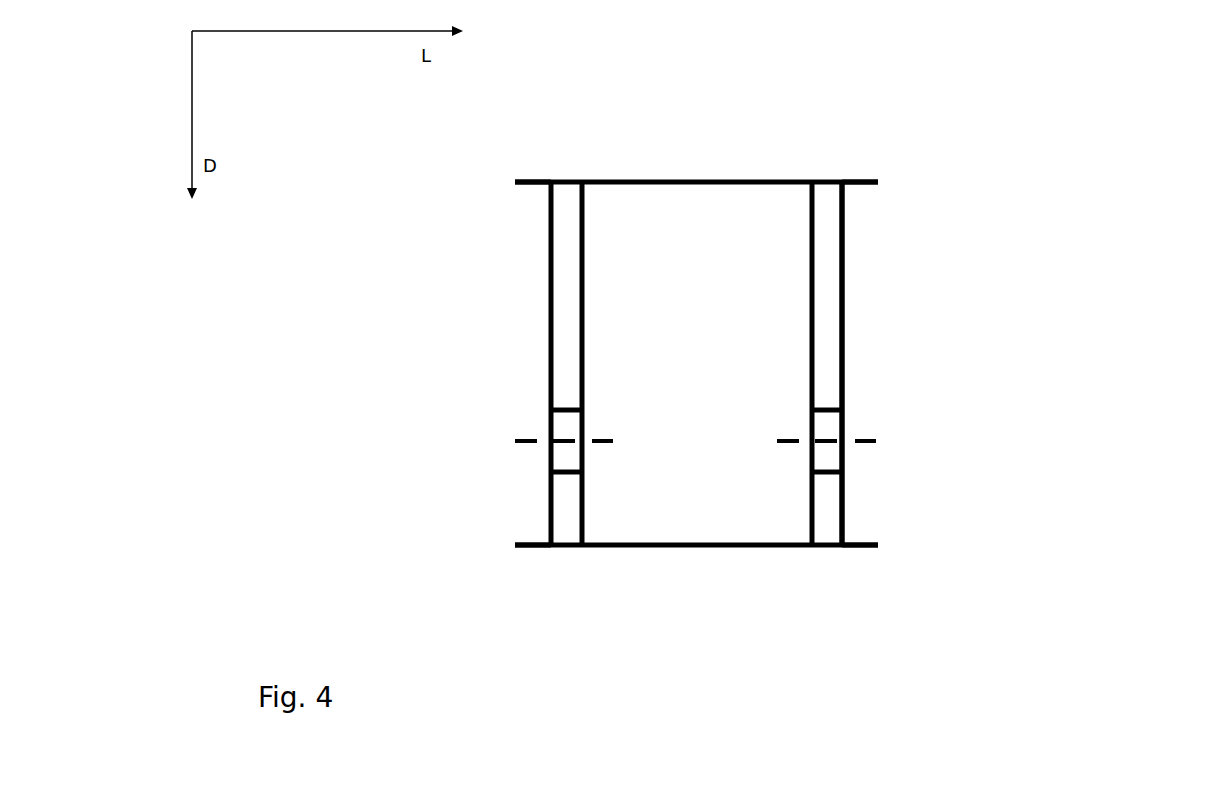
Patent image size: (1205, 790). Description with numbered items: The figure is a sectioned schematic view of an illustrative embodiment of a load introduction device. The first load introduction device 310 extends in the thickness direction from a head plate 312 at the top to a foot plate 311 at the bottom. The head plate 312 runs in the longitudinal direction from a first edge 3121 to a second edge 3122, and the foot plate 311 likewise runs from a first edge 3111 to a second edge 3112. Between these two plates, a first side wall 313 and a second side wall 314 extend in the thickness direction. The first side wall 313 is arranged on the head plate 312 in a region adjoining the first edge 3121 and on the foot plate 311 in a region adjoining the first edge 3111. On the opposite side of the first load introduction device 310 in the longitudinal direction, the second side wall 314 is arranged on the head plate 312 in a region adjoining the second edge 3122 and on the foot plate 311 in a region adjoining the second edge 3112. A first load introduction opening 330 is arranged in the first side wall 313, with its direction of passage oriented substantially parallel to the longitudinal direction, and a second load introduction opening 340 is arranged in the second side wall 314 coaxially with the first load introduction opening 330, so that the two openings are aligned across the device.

The first load introduction device 310 is at (1095, 114).
The foot plate 311 is at (703, 548).
The first edge 3111 is at (515, 548).
The second edge 3112 is at (878, 548).
The head plate 312 is at (763, 179).
The first edge 3121 is at (517, 180).
The second edge 3122 is at (875, 180).
The first side wall 313 is at (573, 303).
The second side wall 314 is at (825, 302).
The first load introduction opening 330 is at (566, 457).
The second load introduction opening 340 is at (822, 458).